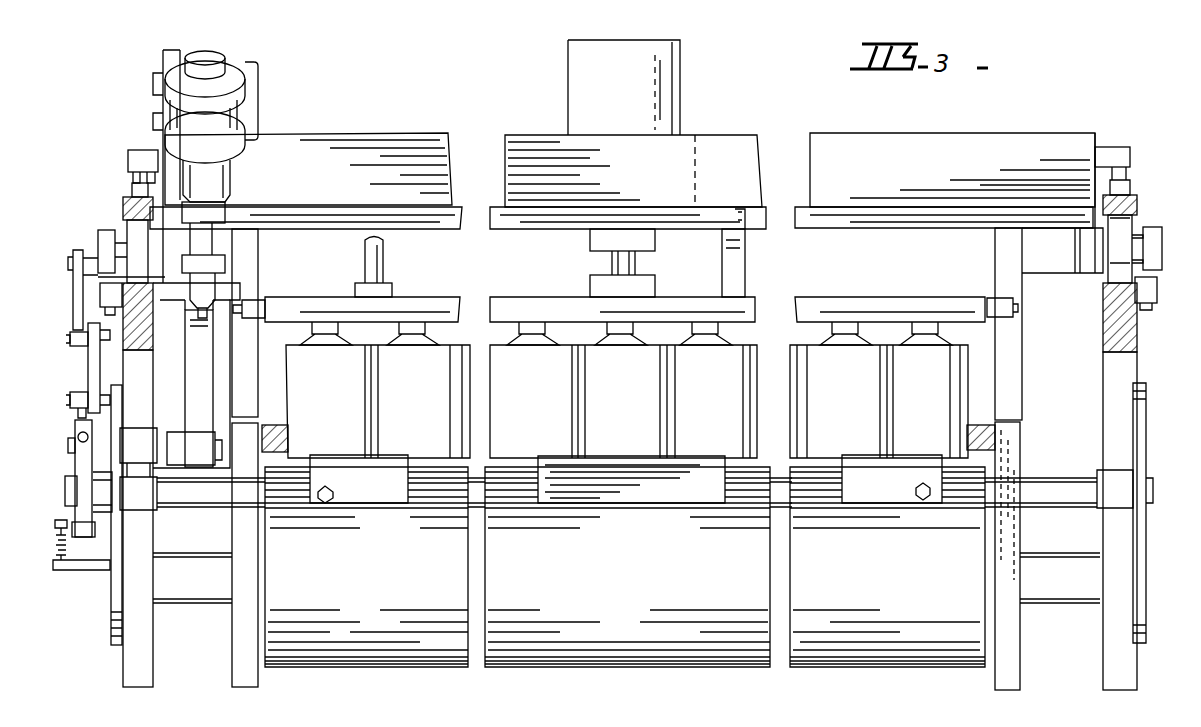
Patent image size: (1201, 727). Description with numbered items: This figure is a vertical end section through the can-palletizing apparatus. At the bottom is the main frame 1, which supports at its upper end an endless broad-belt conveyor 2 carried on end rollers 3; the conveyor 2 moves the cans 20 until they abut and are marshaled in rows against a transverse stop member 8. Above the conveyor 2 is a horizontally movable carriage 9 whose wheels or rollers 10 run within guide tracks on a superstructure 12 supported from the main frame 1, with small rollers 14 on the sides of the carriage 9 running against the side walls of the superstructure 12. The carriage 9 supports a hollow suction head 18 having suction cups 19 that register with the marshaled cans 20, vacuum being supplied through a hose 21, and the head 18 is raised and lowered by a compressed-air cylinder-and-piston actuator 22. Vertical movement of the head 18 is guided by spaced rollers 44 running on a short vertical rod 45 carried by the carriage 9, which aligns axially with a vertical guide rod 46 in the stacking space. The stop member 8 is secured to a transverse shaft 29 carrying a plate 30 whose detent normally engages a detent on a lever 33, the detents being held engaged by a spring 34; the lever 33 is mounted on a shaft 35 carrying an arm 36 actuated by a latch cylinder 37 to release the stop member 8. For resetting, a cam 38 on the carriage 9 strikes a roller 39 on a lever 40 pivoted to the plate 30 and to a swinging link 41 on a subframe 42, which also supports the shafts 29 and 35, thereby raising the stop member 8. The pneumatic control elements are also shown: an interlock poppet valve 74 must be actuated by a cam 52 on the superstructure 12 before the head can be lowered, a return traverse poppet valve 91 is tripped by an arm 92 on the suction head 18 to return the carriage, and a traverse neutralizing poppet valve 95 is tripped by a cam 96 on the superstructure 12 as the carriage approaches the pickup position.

The main frame 1 is at (140, 662).
The endless broad-belt conveyor 2 is at (592, 603).
The end roller 3 is at (925, 660).
The transverse stop member 8 is at (660, 480).
The carriage 9 is at (110, 240).
The wheels or rollers 10 is at (138, 233).
The superstructure 12 is at (1152, 358).
The small rollers 14 is at (113, 297).
The hollow suction head 18 is at (322, 312).
The suction cups 19 is at (528, 330).
The cans 20 is at (685, 370).
The hose 21 is at (375, 273).
The actuator 22 is at (605, 70).
The transverse shaft 29 is at (62, 492).
The plate 30 is at (70, 520).
The lever 33 is at (85, 468).
The spring 34 is at (55, 545).
The shaft 35 is at (68, 444).
The arm 36 is at (198, 398).
The latch cylinder 37 is at (240, 98).
The resetting cam 38 is at (80, 280).
The roller 39 is at (70, 338).
The lever 40 is at (96, 361).
The swinging link 41 is at (78, 396).
The subframe 42 is at (115, 610).
The rollers 44 is at (248, 302).
The short vertical rod 45 is at (247, 378).
The vertical guide rod 46 is at (243, 443).
The cam 52 is at (137, 190).
The unloading position press button interlock poppet valve 74 is at (140, 162).
The return traverse poppet valve 91 is at (742, 222).
The arm 92 is at (746, 267).
The traverse neutralizing poppet valve 95 is at (1108, 160).
The cam 96 is at (1122, 185).